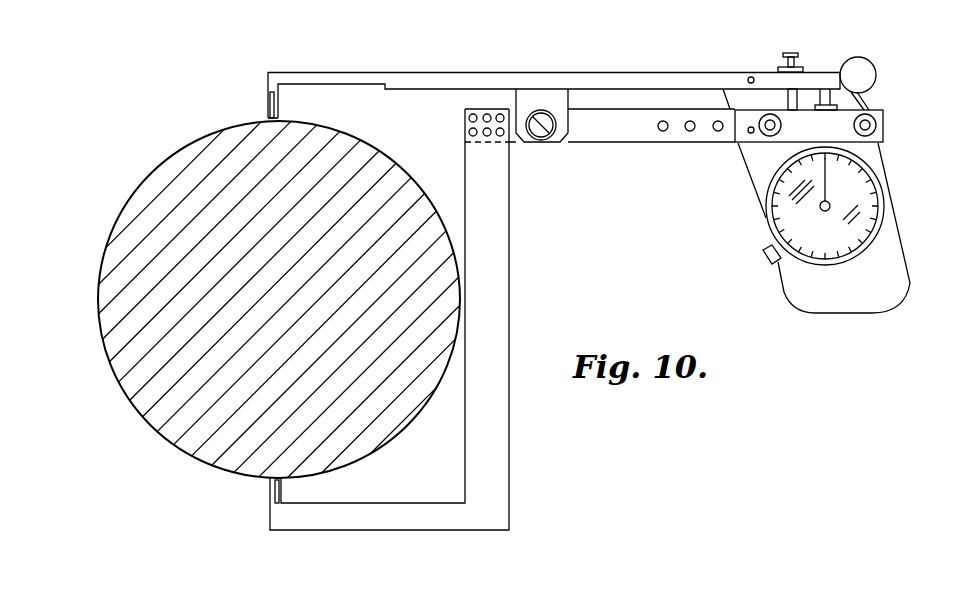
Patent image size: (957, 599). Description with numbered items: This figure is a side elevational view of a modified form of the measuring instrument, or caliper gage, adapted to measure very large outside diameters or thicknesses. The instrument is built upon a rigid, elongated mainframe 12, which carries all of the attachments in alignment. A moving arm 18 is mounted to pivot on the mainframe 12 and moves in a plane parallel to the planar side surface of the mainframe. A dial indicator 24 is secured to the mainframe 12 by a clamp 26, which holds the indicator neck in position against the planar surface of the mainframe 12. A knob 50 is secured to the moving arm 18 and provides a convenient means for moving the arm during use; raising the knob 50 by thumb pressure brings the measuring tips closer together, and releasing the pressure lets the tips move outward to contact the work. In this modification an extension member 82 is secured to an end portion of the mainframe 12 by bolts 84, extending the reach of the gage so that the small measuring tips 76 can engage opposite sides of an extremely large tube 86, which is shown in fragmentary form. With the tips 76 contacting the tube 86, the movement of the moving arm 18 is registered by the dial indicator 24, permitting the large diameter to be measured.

The mainframe 12 is at (641, 145).
The moving arm 18 is at (488, 72).
The dial indicator 24 is at (884, 230).
The clamp 26 is at (883, 108).
The knob 50 is at (868, 60).
The small measuring tips 76 is at (268, 101).
The extension member 82 is at (509, 398).
The bolts 84 is at (464, 112).
The tube 86 is at (138, 188).